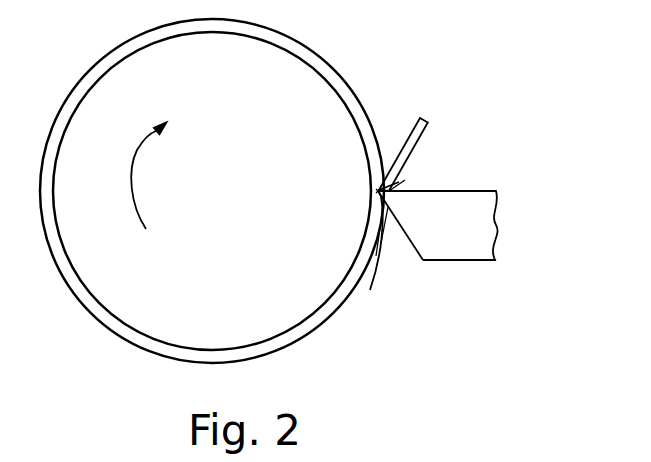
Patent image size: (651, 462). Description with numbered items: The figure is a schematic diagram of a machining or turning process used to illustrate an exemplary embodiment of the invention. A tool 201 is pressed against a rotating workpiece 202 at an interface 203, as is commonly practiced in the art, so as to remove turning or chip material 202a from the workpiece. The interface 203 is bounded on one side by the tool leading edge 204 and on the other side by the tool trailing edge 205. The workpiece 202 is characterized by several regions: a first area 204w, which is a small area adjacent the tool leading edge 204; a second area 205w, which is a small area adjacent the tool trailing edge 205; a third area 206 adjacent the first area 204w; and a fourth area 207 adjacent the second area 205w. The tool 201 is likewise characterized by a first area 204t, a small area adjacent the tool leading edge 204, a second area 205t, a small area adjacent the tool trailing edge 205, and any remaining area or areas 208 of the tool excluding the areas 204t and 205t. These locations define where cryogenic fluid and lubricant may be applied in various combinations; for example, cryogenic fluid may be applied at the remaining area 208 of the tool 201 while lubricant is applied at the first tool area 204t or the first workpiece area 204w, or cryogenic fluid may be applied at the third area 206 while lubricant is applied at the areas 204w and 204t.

The tool 201 is at (453, 241).
The rotating workpiece 202 is at (211, 194).
The turning or chip material 202a is at (412, 124).
The interface 203 is at (378, 190).
The tool leading edge 204 is at (378, 190).
The first area 204w is at (399, 186).
The first area 204t is at (393, 188).
The tool trailing edge 205 is at (378, 192).
The second area 205t is at (378, 197).
The second area 205w is at (380, 252).
The third area 206 is at (321, 55).
The fourth area 207 is at (290, 347).
The remaining area 208 is at (452, 190).